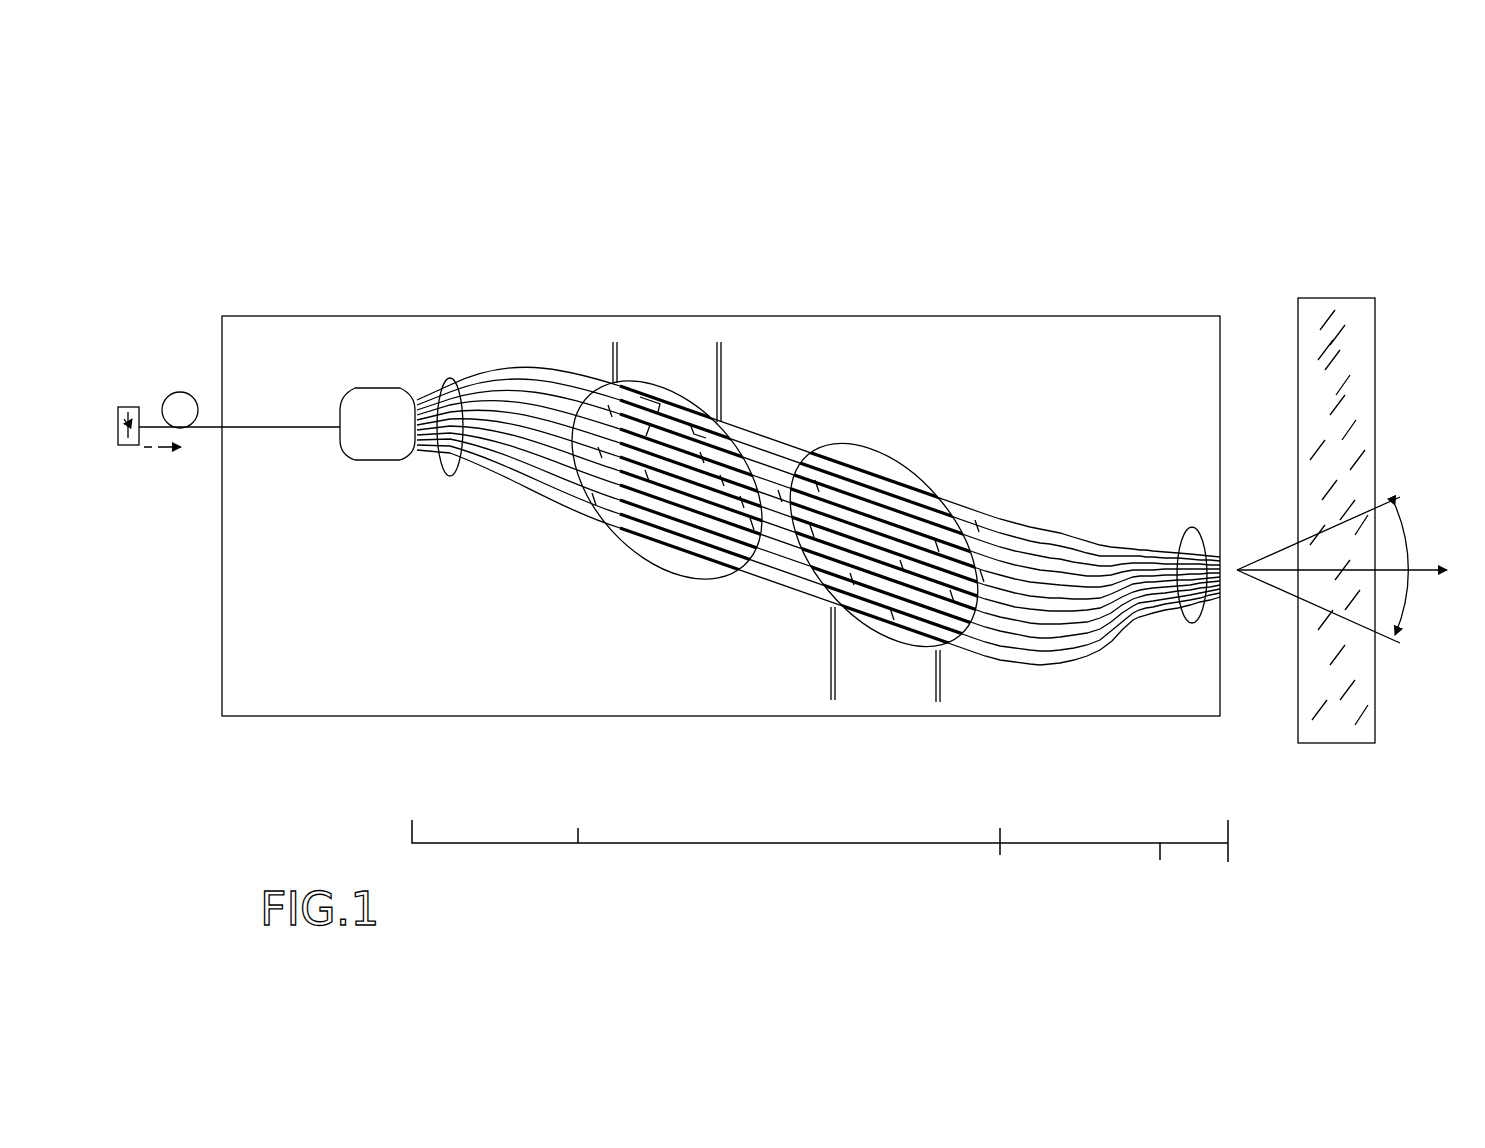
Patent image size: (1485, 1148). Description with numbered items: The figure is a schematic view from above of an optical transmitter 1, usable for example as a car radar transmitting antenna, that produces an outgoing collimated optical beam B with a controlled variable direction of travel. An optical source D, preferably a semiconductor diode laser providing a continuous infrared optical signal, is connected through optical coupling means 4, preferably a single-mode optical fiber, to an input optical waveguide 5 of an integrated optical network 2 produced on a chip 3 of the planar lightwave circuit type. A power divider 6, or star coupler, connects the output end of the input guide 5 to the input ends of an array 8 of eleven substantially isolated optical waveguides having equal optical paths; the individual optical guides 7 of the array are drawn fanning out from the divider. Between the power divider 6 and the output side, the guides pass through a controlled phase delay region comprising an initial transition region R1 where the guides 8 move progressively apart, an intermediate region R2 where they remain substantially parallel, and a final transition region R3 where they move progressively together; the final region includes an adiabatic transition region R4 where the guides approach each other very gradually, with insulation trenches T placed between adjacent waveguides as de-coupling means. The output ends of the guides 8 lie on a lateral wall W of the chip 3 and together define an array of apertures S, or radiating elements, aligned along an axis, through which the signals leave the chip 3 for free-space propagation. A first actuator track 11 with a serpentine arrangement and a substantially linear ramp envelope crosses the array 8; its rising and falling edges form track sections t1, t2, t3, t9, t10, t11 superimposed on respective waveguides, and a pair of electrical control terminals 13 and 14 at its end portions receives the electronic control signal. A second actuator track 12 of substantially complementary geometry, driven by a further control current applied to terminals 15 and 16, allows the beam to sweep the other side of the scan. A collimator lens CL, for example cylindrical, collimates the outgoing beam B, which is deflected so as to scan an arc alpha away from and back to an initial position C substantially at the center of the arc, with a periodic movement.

The optical transmitter 1 is at (483, 150).
The integrated optical network 2 is at (217, 592).
The chip 3 is at (360, 665).
The optical coupling means 4 is at (180, 392).
The input optical waveguide 5 is at (271, 425).
The power divider 6 is at (357, 389).
The ion beam 7 is at (540, 367).
The array of optical waveguides 8 is at (450, 467).
The first actuator track 11 is at (663, 567).
The second actuator track 12 is at (893, 640).
The electrical control terminal 13 is at (616, 345).
The electrical control terminal 14 is at (827, 667).
The terminal 15 is at (720, 377).
The terminal 16 is at (940, 700).
The actuator track section t1 is at (625, 377).
The actuator track section t2 is at (642, 397).
The actuator track section t3 is at (677, 430).
The actuator track section t9 is at (623, 503).
The actuator track section t10 is at (650, 530).
The actuator track section t11 is at (683, 577).
The optical source D is at (125, 405).
The insulation trenches T is at (1147, 547).
The collimator lens CL is at (1297, 330).
The array of apertures S is at (1228, 593).
The lateral wall W is at (1222, 688).
The optical beam B is at (1417, 570).
The initial position C is at (1353, 583).
The arc alpha is at (1403, 500).
The initial transition region R1 is at (820, 837).
The intermediate region R2 is at (799, 827).
The final transition region R3 is at (1102, 827).
The adiabatic transition region R4 is at (1189, 889).